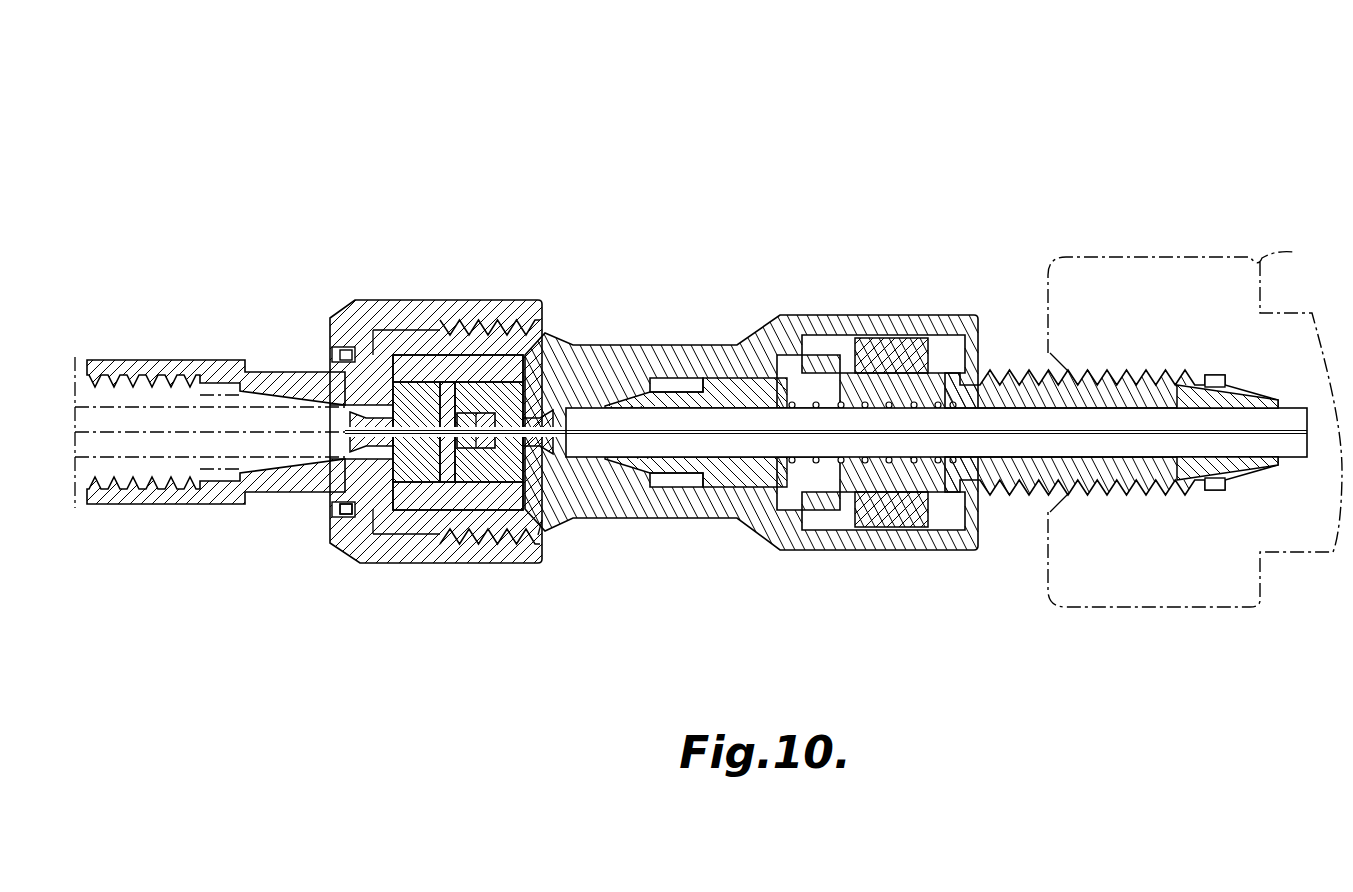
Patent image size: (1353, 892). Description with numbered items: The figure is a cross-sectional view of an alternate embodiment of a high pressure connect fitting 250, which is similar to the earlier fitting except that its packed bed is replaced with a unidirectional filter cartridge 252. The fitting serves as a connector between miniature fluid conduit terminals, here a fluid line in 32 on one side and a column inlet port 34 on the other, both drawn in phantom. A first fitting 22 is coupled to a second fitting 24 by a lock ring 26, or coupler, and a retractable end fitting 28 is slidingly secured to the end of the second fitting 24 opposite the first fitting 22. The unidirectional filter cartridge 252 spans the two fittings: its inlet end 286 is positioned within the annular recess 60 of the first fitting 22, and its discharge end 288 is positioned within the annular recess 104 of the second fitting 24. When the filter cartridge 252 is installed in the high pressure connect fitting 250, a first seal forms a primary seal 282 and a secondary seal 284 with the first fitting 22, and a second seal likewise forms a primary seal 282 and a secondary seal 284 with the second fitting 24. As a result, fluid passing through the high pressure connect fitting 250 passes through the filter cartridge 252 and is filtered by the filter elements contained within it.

The high pressure connect fitting 250 is at (860, 116).
The column inlet port 34 is at (1292, 254).
The fluid line in 32 is at (75, 360).
The first fitting 22 is at (195, 360).
The lock ring 26 is at (407, 300).
The annular recess 60 is at (357, 308).
The unidirectional filter cartridge 252 is at (473, 345).
The annular recess 104 is at (532, 345).
The secondary seal 284 is at (530, 380).
The primary seal 282 is at (365, 400).
The second fitting 24 is at (760, 330).
The retractable end fitting 28 is at (1015, 370).
The inlet end 286 is at (335, 506).
The discharge end 288 is at (540, 535).